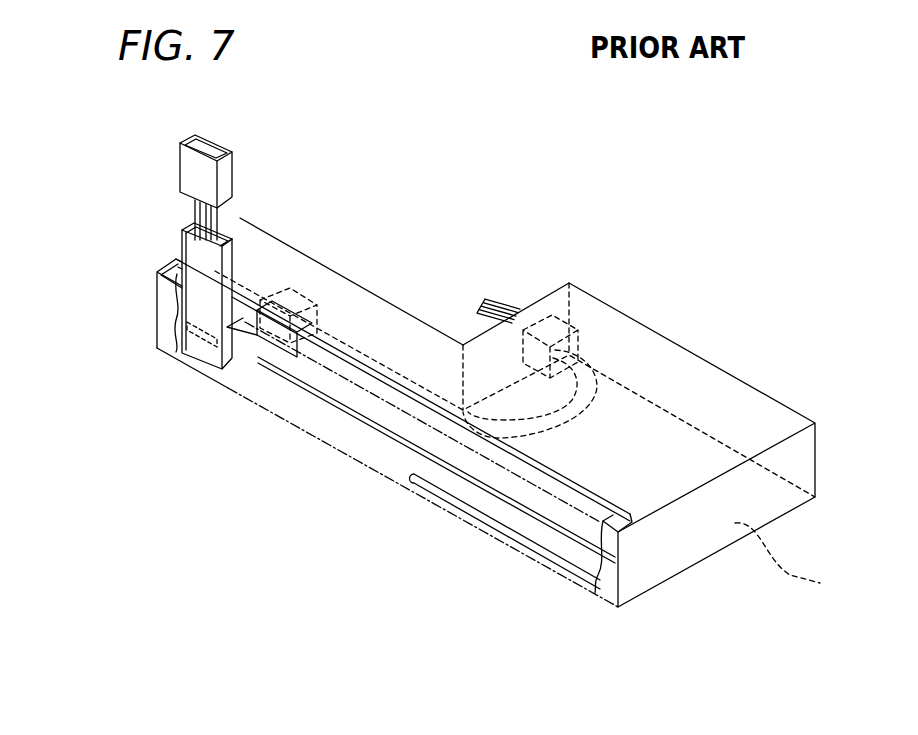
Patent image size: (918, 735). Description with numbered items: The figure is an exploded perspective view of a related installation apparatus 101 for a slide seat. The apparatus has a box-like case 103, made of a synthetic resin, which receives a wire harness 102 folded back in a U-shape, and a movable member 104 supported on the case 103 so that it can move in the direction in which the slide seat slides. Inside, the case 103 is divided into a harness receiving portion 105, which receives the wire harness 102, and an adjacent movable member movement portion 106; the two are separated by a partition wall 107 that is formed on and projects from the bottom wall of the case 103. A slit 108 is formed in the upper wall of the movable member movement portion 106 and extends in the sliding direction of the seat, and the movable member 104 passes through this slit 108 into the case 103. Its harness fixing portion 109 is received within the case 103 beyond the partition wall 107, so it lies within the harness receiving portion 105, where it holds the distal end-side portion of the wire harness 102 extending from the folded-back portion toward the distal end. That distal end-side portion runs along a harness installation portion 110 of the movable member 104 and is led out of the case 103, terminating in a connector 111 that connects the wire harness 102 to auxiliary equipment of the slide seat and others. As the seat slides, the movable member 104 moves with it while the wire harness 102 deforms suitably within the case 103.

The installation apparatus 101 is at (555, 203).
The wire harness 102 is at (582, 352).
The case 103 is at (745, 380).
The movable member 104 is at (180, 240).
The harness receiving portion 105 is at (799, 559).
The movable member movement portion 106 is at (608, 590).
The partition wall 107 is at (419, 457).
The slit 108 is at (580, 480).
The harness fixing portion 109 is at (295, 305).
The harness installation portion 110 is at (157, 273).
The connector 111 is at (192, 162).